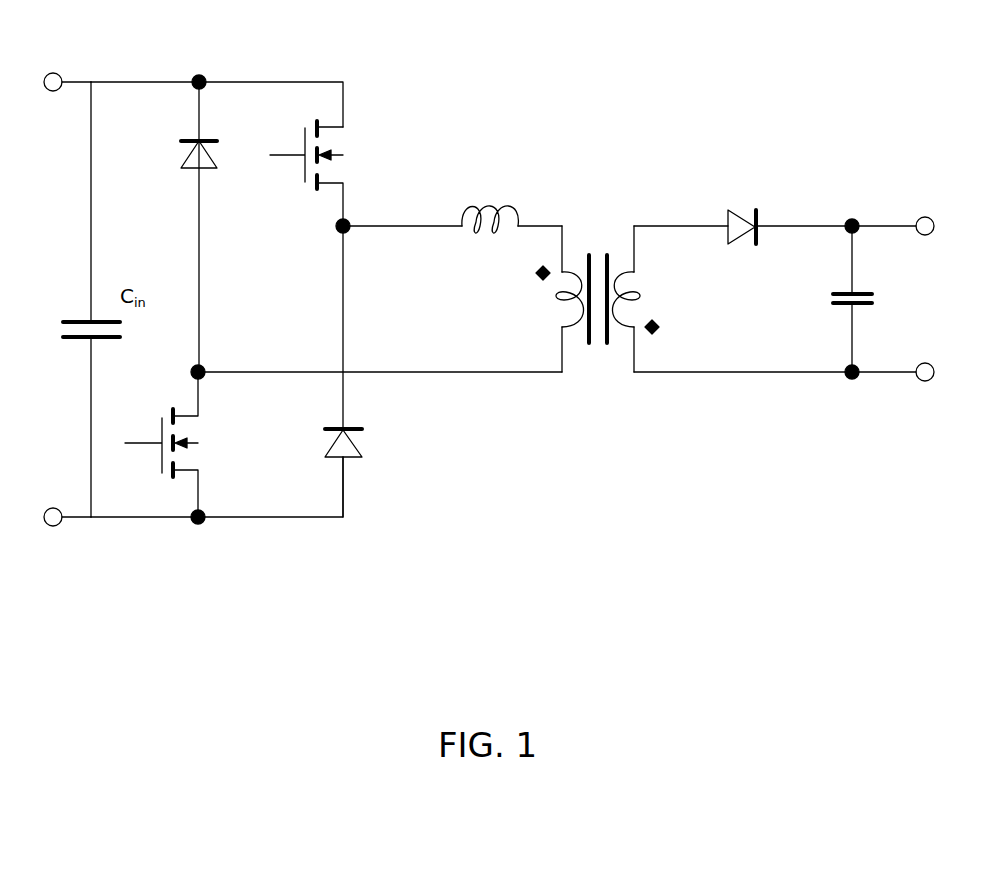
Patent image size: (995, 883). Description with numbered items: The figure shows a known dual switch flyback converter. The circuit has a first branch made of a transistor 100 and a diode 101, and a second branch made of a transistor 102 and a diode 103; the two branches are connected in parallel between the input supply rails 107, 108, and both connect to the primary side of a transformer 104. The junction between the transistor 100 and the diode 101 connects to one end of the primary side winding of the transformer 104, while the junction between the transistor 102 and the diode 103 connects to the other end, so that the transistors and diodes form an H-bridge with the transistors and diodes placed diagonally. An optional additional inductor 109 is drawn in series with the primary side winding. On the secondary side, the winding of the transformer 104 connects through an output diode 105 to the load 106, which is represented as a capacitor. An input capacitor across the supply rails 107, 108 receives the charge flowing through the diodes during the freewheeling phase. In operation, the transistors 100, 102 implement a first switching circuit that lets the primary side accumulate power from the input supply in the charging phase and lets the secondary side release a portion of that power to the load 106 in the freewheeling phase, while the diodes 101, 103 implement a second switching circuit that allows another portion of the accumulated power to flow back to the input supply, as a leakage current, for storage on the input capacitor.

The transistor 100 is at (215, 462).
The diode 101 is at (178, 172).
The transistor 102 is at (353, 155).
The diode 103 is at (362, 443).
The transformer 104 is at (597, 228).
The output diode 105 is at (743, 210).
The load 106 is at (868, 282).
The input supply rail 107 is at (297, 72).
The input supply rail 108 is at (305, 524).
The additional inductor 109 is at (489, 200).